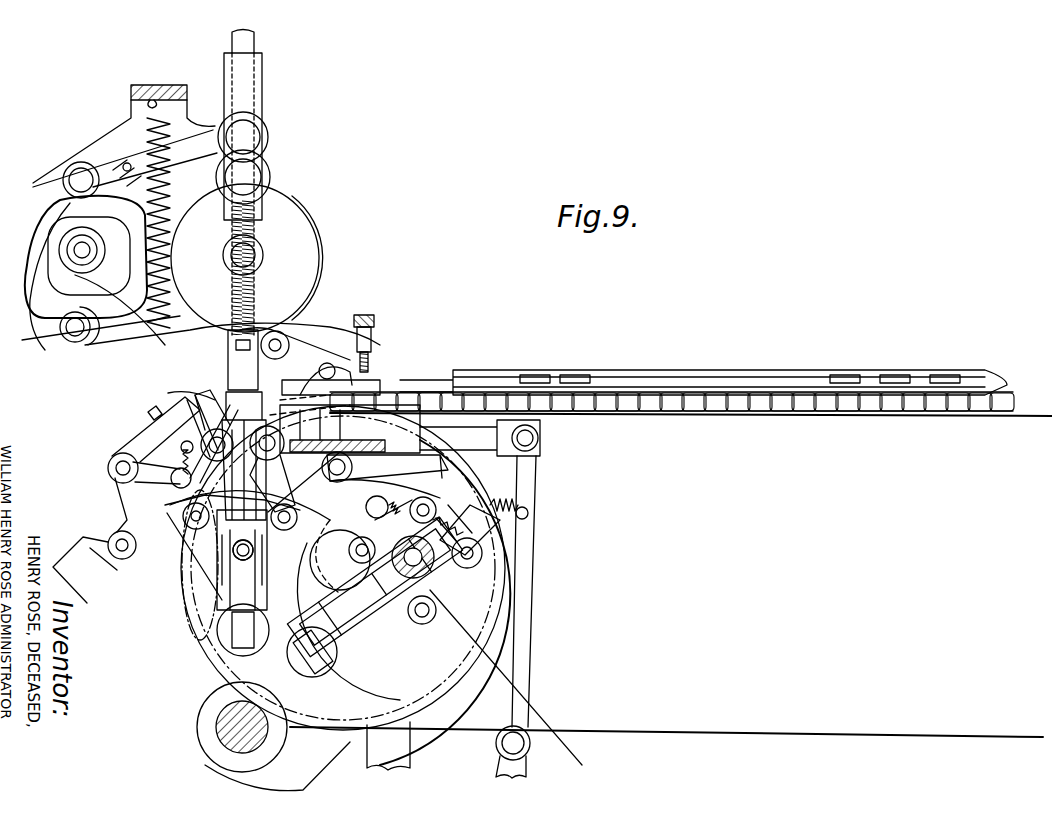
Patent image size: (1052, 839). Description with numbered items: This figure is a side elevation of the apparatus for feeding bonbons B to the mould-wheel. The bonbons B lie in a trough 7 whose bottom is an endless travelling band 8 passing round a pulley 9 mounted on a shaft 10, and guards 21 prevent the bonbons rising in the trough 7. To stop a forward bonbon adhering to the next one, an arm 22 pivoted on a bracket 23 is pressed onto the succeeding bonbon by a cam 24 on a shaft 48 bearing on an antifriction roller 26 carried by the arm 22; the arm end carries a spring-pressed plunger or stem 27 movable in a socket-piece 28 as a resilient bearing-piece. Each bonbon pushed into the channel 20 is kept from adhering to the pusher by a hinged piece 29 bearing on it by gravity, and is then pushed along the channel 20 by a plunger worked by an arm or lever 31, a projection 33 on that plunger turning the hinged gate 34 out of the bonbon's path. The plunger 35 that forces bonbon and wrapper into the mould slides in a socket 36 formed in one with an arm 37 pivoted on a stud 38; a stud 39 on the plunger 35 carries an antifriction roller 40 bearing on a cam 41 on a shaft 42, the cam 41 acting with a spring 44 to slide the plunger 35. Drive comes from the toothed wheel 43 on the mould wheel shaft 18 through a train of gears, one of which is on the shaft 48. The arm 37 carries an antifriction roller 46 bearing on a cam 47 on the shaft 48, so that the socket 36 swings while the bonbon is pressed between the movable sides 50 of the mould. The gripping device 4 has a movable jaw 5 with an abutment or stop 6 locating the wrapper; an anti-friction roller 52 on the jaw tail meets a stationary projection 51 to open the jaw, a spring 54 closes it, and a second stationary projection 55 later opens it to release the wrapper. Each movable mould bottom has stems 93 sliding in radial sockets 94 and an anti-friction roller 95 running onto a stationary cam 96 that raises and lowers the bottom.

The gripping device 4 is at (336, 486).
The movable jaw 5 is at (147, 437).
The abutment or stop 6 is at (172, 396).
The trough 7 is at (747, 405).
The endless travelling band 8 is at (601, 414).
The pulley 9 is at (450, 682).
The shaft 10 is at (338, 534).
The mould wheel shaft 18 is at (232, 722).
The channel 20 is at (357, 432).
The guards 21 is at (668, 375).
The arm 22 is at (133, 338).
The bracket 23 is at (215, 400).
The cam 24 is at (86, 257).
The antifriction roller 26 is at (77, 343).
The spring-pressed plunger or stem 27 is at (371, 340).
The socket-piece 28 is at (376, 348).
The hinged piece 29 is at (305, 380).
The arm or lever 31 is at (520, 630).
The projection 33 is at (322, 410).
The hinged piece or gate 34 is at (328, 394).
The plunger 35 is at (247, 44).
The socket 36 is at (260, 81).
The arm 37 is at (173, 223).
The stud 38 is at (267, 131).
The stud 39 is at (268, 166).
The antifriction roller 40 is at (270, 178).
The cam 41 is at (286, 237).
The shaft 42 is at (262, 259).
The toothed wheel 43 is at (320, 240).
The spring 44 is at (232, 290).
The antifriction roller 46 is at (81, 164).
The cam 47 is at (40, 272).
The shaft 48 is at (82, 250).
The movable sides 50 is at (548, 548).
The stationary projection 51 is at (355, 514).
The anti-friction roller 52 is at (176, 485).
The spring 54 is at (182, 456).
The stationary projection 55 is at (186, 512).
The stems 93 is at (238, 628).
The radial sockets 94 is at (258, 546).
The anti-friction roller 95 is at (215, 573).
The stationary cam 96 is at (343, 568).
The bonbon B is at (690, 414).